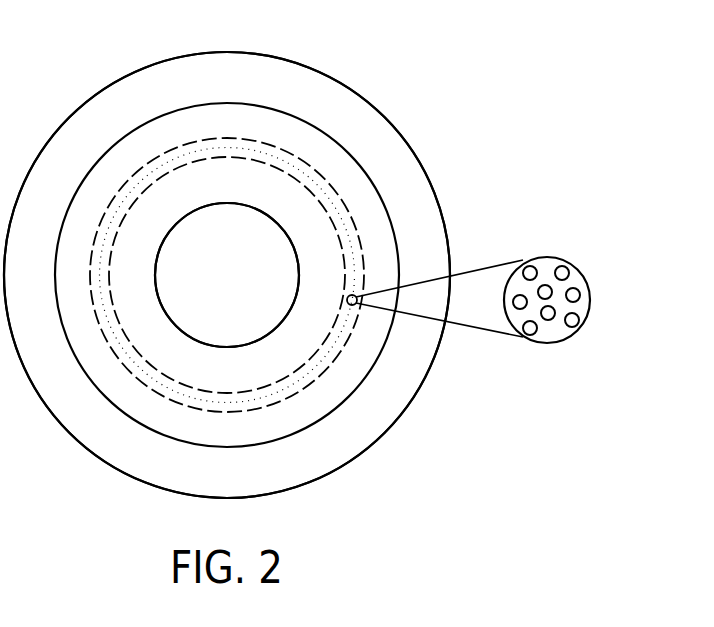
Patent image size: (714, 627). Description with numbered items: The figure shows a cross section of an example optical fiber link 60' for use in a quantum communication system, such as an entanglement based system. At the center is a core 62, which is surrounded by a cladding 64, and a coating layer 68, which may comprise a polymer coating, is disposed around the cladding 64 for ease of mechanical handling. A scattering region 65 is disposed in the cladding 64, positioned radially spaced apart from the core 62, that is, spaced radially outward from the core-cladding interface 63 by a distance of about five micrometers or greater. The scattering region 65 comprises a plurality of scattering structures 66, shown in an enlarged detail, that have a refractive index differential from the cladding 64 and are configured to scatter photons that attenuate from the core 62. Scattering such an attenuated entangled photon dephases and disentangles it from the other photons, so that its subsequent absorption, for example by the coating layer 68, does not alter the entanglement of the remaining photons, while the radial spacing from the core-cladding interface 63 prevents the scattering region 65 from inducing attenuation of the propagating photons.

The optical fiber link 60' is at (287, 255).
The core 62 is at (243, 286).
The core-cladding interface 63 is at (264, 344).
The cladding 64 is at (246, 196).
The scattering region 65 is at (276, 157).
The scattering structures 66 is at (562, 264).
The coating layer 68 is at (249, 93).